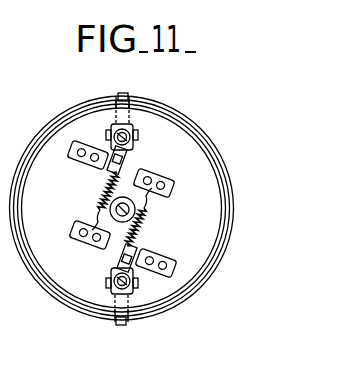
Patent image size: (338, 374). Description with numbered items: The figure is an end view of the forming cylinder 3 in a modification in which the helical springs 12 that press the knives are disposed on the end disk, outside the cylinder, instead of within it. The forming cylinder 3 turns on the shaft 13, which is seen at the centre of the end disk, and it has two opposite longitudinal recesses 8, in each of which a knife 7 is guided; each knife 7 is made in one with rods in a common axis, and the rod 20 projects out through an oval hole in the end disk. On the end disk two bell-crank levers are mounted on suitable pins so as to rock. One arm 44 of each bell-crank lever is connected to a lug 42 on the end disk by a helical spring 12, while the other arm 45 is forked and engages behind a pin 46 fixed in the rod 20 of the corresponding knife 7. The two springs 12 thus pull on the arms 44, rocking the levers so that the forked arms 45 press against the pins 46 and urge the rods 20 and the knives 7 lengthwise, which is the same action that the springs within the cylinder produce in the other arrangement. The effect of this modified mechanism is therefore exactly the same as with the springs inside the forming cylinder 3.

The forming cylinder 3 is at (44, 127).
The knife 7 is at (128, 96).
The longitudinal recess 8 is at (122, 92).
The helical spring 12 is at (100, 188).
The shaft 13 is at (110, 209).
The rod 20 is at (132, 126).
The lug 42 is at (168, 184).
The bell-crank lever arm 44 is at (128, 153).
The forked lever arm 45 is at (110, 133).
The pin 46 is at (136, 133).